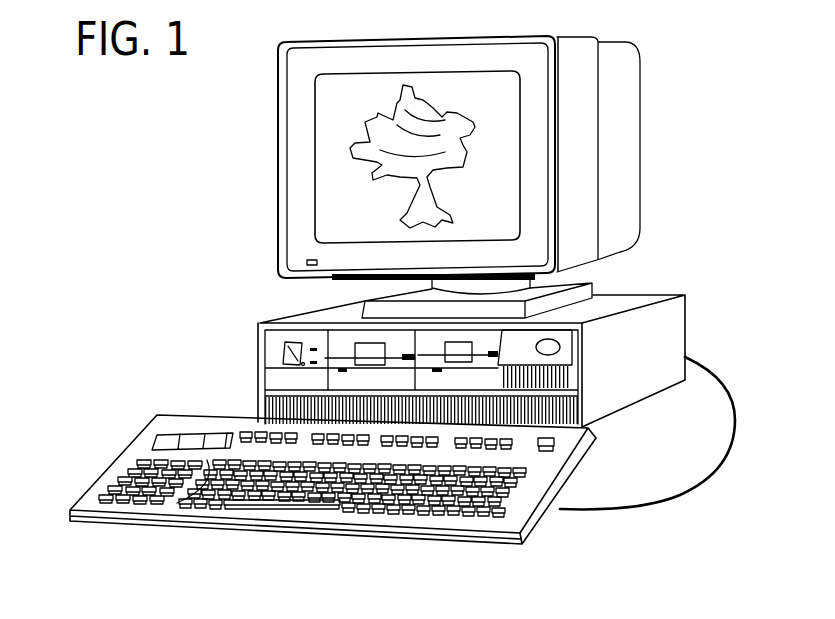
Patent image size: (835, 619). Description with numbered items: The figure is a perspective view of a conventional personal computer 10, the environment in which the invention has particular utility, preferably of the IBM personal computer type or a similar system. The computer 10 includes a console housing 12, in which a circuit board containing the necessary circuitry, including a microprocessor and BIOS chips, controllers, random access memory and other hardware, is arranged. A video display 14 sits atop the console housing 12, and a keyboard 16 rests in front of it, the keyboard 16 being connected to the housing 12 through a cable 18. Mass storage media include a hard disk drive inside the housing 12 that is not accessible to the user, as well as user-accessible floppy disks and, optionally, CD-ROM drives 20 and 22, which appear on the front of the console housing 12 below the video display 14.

The computer 10 is at (119, 197).
The console housing 12 is at (637, 288).
The video display 14 is at (640, 92).
The keyboard 16 is at (455, 542).
The cable 18 is at (707, 475).
The CD-ROM drive 20 is at (377, 347).
The CD-ROM drive 22 is at (483, 347).